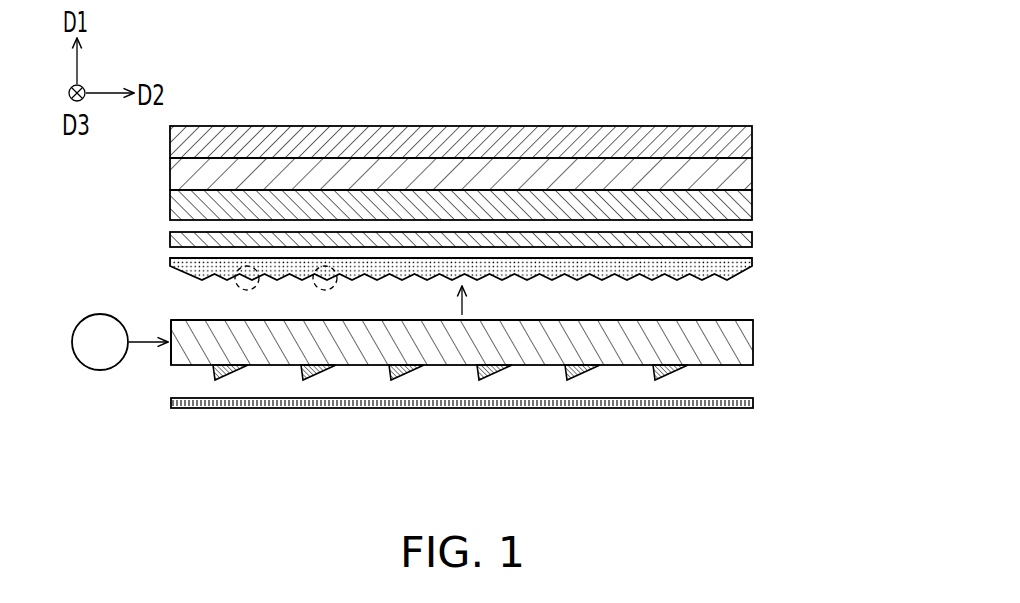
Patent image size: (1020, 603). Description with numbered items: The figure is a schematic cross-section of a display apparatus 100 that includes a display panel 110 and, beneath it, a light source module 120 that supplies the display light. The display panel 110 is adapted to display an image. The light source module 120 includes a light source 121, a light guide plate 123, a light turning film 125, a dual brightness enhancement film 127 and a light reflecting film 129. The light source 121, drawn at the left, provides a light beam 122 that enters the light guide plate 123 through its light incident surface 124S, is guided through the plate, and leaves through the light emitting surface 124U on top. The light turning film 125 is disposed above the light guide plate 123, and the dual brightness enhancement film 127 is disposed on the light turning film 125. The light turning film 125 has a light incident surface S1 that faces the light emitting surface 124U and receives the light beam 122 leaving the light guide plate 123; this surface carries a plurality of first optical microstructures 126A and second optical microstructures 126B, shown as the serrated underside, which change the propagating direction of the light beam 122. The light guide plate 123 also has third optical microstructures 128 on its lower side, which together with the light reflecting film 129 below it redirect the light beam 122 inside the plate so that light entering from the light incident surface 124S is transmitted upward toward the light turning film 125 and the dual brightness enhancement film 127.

The display apparatus 100 is at (476, 310).
The display panel 110 is at (758, 126).
The light source module 120 is at (502, 350).
The light source 121 is at (92, 316).
The light beam 122 is at (140, 345).
The light guide plate 123 is at (737, 347).
The light emitting surface 124U is at (735, 320).
The light incident surface 124S is at (168, 322).
The light turning film 125 is at (745, 268).
The first optical microstructures 126A is at (236, 287).
The second optical microstructures 126B is at (337, 287).
The dual brightness enhancement film 127 is at (747, 238).
The third optical microstructures 128 is at (210, 372).
The light reflecting film 129 is at (500, 394).
The light incident surface S1 is at (583, 279).